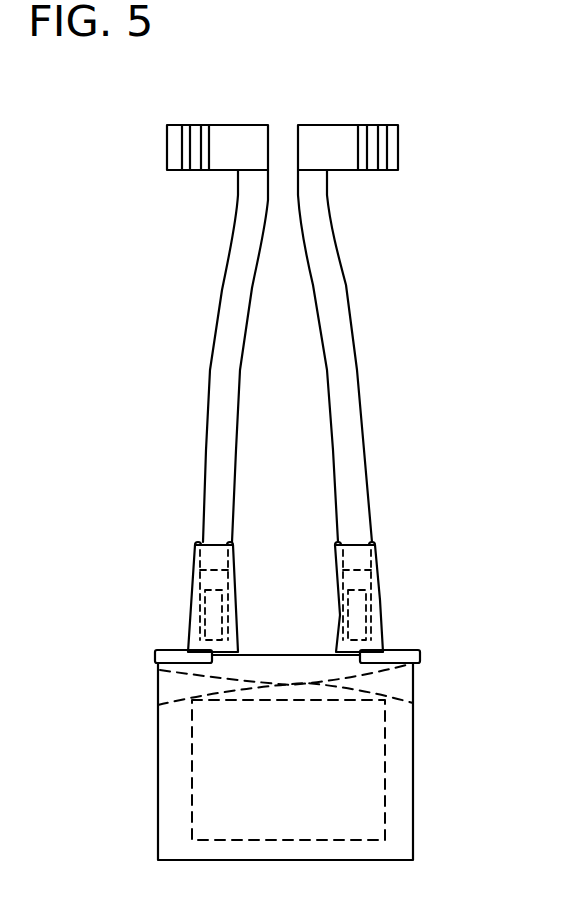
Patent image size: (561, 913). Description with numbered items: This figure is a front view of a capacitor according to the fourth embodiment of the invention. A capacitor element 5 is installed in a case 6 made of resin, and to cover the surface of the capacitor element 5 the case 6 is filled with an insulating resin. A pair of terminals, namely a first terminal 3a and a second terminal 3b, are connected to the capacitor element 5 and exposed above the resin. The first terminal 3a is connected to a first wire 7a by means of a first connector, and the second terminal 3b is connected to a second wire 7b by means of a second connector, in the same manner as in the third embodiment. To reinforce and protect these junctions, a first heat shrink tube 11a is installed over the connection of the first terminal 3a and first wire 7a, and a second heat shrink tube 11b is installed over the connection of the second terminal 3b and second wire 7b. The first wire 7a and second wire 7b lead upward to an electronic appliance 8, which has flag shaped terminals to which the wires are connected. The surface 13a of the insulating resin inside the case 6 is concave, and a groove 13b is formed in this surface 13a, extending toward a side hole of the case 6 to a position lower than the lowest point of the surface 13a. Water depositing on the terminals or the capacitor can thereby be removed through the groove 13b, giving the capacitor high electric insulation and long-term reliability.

The electronic appliance 8 is at (253, 142).
The first wire 7a is at (225, 353).
The second wire 7b is at (348, 357).
The first heat shrink tube 11a is at (193, 575).
The second heat shrink tube 11b is at (382, 570).
The first terminal 3a is at (190, 643).
The second terminal 3b is at (383, 638).
The surface of the insulating resin 13a is at (183, 675).
The groove 13b is at (183, 702).
The capacitor element 5 is at (362, 742).
The case 6 is at (405, 793).